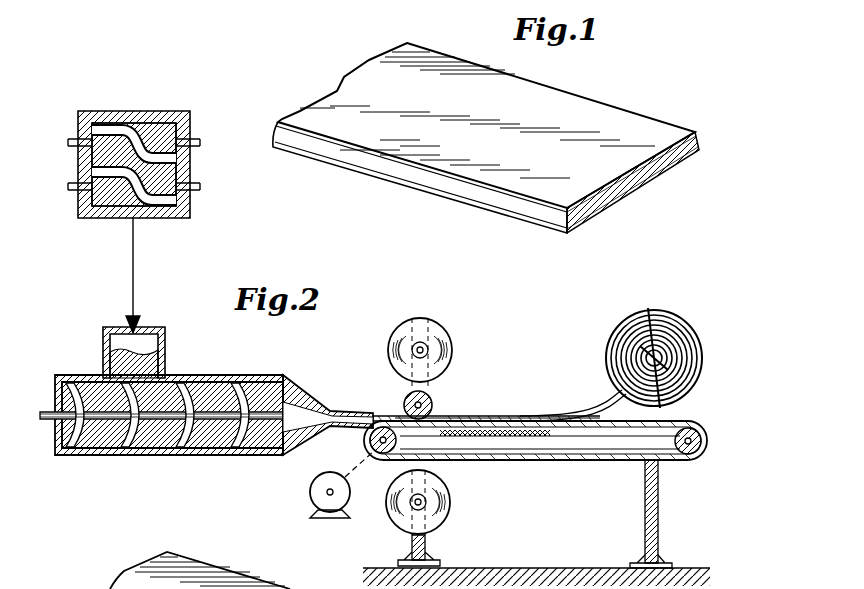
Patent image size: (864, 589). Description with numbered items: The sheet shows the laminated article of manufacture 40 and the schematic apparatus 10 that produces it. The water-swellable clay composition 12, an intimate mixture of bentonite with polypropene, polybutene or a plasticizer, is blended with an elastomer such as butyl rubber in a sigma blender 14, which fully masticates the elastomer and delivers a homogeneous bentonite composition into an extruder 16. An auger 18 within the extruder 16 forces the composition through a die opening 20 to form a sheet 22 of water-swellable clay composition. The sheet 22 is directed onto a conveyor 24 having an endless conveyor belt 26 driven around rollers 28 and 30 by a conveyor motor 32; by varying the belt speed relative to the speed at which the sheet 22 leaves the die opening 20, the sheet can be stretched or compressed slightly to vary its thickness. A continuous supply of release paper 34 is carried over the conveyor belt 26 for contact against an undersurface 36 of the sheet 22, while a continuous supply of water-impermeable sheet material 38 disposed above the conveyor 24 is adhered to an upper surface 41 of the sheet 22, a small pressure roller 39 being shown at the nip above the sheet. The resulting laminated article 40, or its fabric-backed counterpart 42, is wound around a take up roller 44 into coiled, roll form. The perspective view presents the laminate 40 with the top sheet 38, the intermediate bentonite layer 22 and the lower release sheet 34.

In FIG. 2, the apparatus 10 is at (206, 396).
In FIG. 2, the water-swellable clay composition 12 is at (107, 362).
In FIG. 2, the sigma blender 14 is at (140, 108).
In FIG. 2, the extruder 16 is at (158, 327).
In FIG. 2, the auger 18 is at (150, 448).
In FIG. 2, the die opening 20 is at (368, 412).
In FIG. 1, the sheet of water-swellable clay composition 22 is at (641, 173).
In FIG. 2, the sheet of water-swellable clay composition 22 is at (398, 415).
In FIG. 2, the conveyor 24 is at (527, 494).
In FIG. 2, the endless conveyor belt 26 is at (583, 461).
In FIG. 2, the roller 28 is at (370, 449).
In FIG. 2, the roller 30 is at (700, 458).
In FIG. 2, the conveyor motor 32 is at (310, 493).
In FIG. 1, the release paper 34 is at (490, 203).
In FIG. 2, the release paper 34 is at (444, 496).
In FIG. 2, the undersurface 36 is at (369, 440).
In FIG. 1, the water-impermeable sheet material 38 is at (582, 105).
In FIG. 2, the water-impermeable sheet material 38 is at (478, 420).
In FIG. 2, the pressure roller 39 is at (432, 404).
In FIG. 1, the laminated article of manufacture 40 is at (489, 138).
In FIG. 2, the laminated article of manufacture 40 is at (556, 416).
In FIG. 2, the upper surface 41 is at (392, 416).
In FIG. 2, the laminated article of manufacture 42 is at (320, 586).
In FIG. 2, the take up roller 44 is at (670, 316).